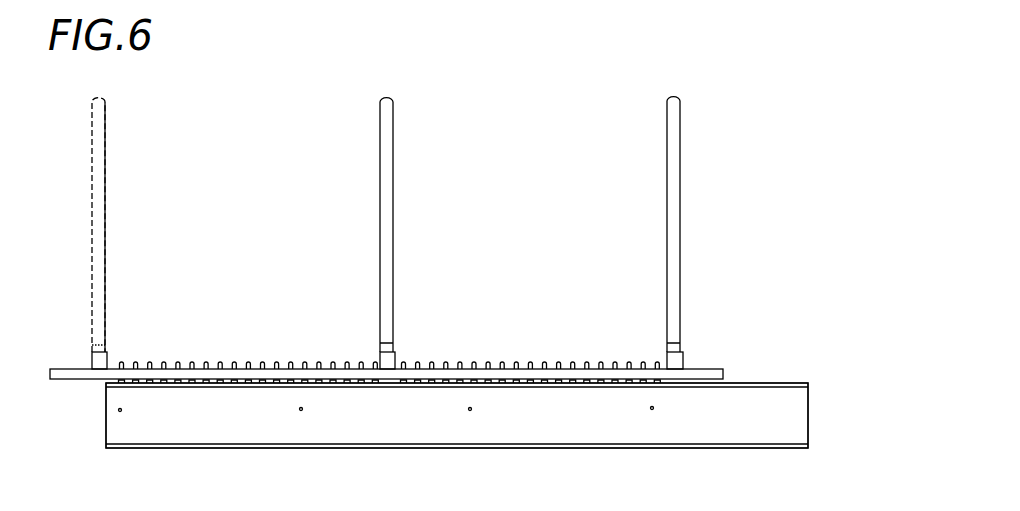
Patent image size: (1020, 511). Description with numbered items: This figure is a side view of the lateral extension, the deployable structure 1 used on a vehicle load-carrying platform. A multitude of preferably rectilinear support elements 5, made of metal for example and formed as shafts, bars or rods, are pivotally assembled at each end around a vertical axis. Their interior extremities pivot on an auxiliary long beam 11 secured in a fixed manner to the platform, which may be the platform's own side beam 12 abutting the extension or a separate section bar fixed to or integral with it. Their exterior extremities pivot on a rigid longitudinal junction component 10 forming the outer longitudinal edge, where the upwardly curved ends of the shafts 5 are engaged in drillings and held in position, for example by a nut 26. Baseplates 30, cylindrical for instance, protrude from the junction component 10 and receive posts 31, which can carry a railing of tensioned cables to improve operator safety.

The deployable structure 1 is at (489, 323).
The support elements 5 is at (148, 365).
The rigid longitudinal junction component 10 is at (358, 381).
The auxiliary long beam 11 is at (634, 430).
The side beam 12 is at (457, 415).
The nut 26 is at (653, 362).
The baseplates 30 is at (98, 358).
The posts 31 is at (98, 133).